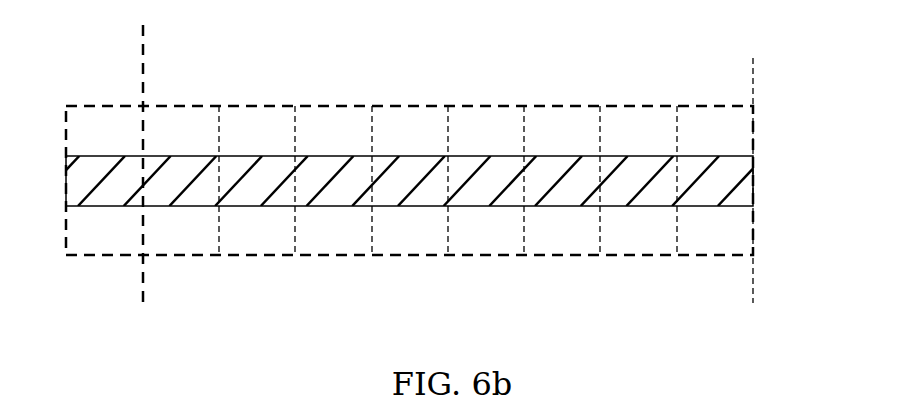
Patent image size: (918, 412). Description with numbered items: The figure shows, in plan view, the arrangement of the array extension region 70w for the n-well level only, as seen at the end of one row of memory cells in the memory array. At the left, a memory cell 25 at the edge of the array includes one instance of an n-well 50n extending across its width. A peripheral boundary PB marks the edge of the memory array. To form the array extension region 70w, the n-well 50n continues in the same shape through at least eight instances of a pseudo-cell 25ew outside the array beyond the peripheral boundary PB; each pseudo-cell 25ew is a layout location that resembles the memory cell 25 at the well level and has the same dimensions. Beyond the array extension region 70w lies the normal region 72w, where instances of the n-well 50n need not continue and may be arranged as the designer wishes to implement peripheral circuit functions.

The peripheral boundary PB is at (142, 154).
The memory cell 25 is at (101, 95).
The pseudo-cell 25ew is at (195, 95).
The n-well 50n is at (415, 207).
The array extension region 70w is at (750, 310).
The normal region 72w is at (830, 310).